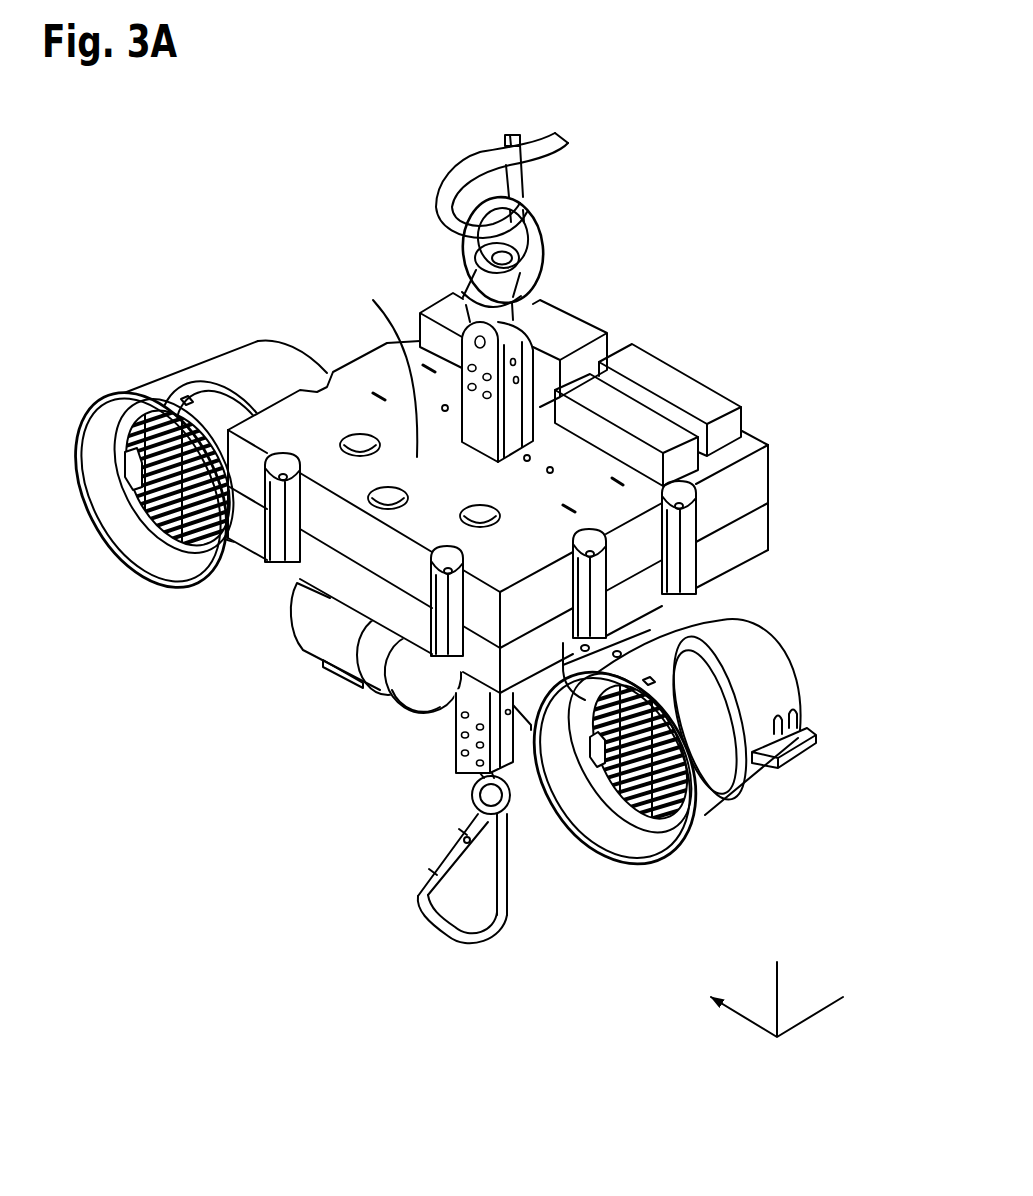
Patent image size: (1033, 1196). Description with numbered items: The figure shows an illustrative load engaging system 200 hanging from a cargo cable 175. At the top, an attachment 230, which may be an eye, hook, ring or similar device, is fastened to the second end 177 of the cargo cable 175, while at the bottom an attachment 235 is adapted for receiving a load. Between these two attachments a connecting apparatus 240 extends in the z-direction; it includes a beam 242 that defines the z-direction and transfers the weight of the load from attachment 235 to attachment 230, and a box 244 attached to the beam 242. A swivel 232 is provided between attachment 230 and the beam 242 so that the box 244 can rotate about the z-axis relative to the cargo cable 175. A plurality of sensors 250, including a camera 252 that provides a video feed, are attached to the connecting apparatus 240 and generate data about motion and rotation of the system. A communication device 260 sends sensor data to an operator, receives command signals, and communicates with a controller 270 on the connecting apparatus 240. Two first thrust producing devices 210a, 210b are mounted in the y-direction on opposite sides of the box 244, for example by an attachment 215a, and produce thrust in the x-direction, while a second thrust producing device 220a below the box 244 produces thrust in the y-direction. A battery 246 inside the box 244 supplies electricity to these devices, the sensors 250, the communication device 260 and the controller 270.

The cargo cable 175 is at (505, 140).
The second end of cargo cable 177 is at (572, 177).
The load engaging system 200 is at (178, 250).
The first thrust producing device 210a is at (748, 661).
The first thrust producing device 210b is at (245, 368).
The attachment 215a is at (653, 632).
The second thrust producing device 220a is at (323, 642).
The attachment 230 is at (517, 230).
The swivel 232 is at (513, 316).
The attachment 235 is at (498, 930).
The connecting apparatus 240 is at (806, 421).
The beam 242 is at (478, 410).
The box 244 is at (420, 410).
The battery 246 is at (443, 313).
The sensors 250 is at (773, 440).
The camera 252 is at (662, 385).
The communication device 260 is at (613, 313).
The controller 270 is at (638, 333).